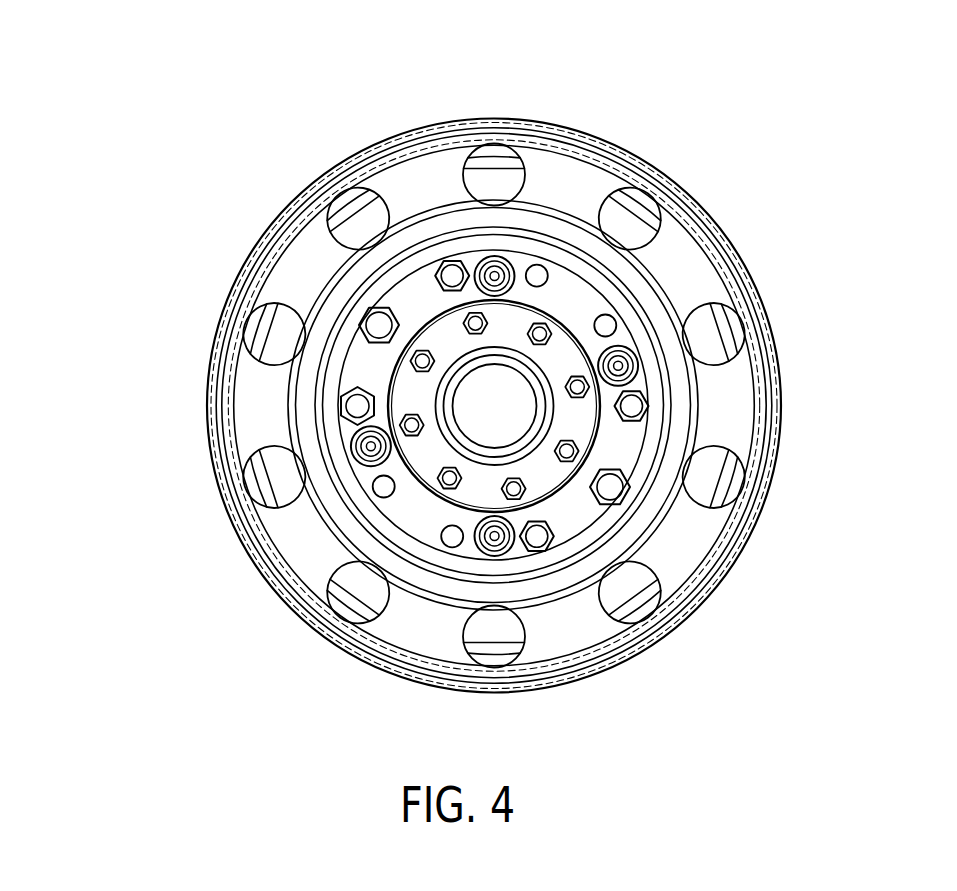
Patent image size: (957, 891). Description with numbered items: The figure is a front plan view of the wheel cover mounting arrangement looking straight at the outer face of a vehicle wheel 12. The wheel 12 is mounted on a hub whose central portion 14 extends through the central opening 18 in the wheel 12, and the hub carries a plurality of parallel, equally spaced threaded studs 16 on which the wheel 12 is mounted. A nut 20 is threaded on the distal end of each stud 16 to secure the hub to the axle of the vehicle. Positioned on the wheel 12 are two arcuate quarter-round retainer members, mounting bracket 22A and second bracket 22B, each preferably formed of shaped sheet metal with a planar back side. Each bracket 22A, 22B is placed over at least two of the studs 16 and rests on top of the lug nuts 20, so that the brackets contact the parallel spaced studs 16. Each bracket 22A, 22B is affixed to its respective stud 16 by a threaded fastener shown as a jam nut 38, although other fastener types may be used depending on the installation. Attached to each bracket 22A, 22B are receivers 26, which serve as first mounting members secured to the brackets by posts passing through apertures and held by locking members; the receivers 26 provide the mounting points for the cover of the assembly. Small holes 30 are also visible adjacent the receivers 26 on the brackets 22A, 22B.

The wheel 12 is at (497, 113).
The central portion 14 is at (515, 413).
The threaded studs 16 is at (379, 322).
The central opening 18 is at (421, 305).
The nut 20 is at (378, 316).
The mounting bracket 22A is at (577, 290).
The second bracket 22B is at (418, 522).
The receivers 26 is at (495, 262).
The hole 30 is at (537, 270).
The jam nut 38 is at (452, 262).